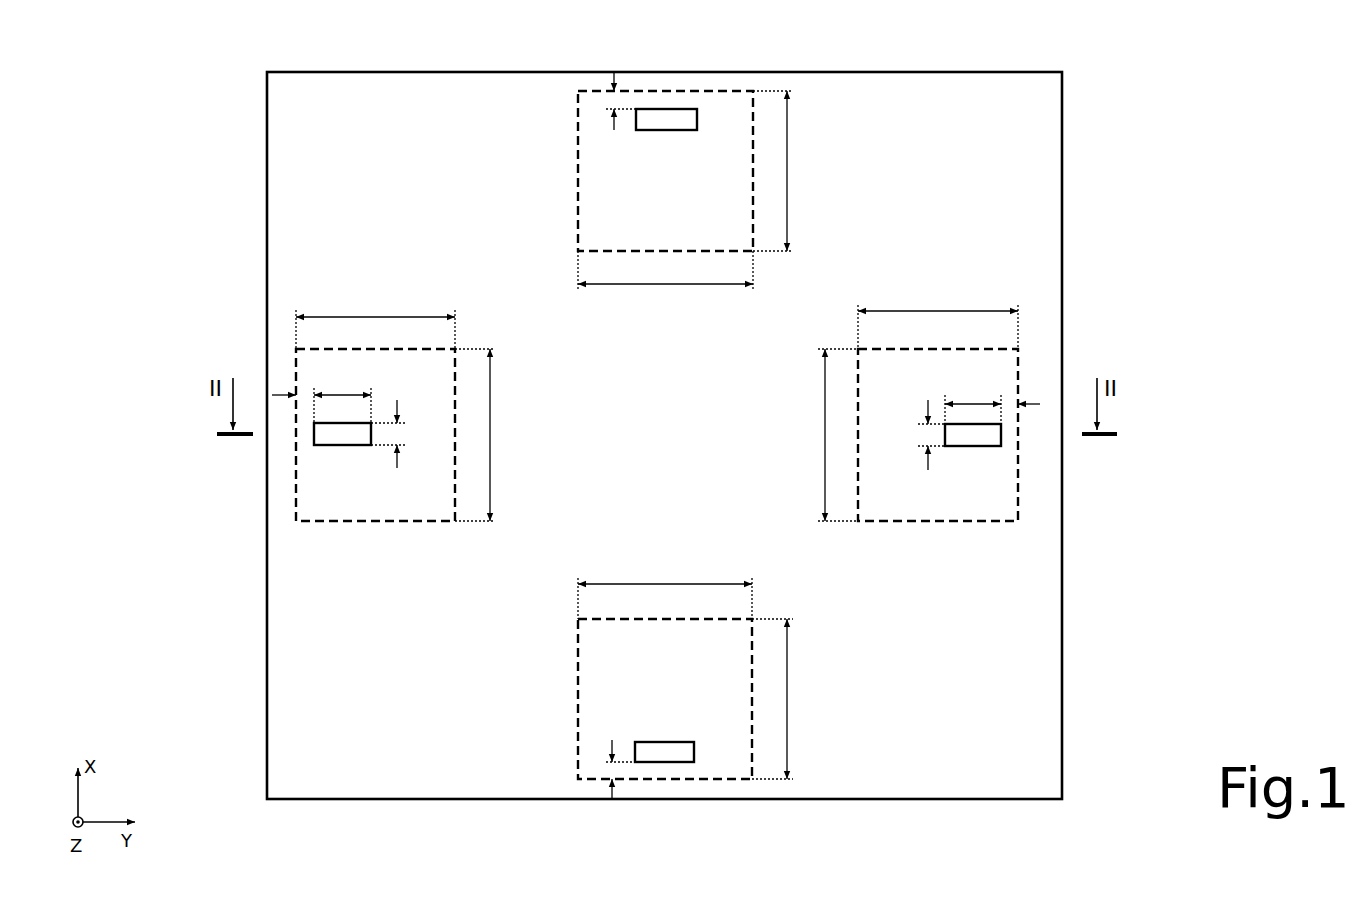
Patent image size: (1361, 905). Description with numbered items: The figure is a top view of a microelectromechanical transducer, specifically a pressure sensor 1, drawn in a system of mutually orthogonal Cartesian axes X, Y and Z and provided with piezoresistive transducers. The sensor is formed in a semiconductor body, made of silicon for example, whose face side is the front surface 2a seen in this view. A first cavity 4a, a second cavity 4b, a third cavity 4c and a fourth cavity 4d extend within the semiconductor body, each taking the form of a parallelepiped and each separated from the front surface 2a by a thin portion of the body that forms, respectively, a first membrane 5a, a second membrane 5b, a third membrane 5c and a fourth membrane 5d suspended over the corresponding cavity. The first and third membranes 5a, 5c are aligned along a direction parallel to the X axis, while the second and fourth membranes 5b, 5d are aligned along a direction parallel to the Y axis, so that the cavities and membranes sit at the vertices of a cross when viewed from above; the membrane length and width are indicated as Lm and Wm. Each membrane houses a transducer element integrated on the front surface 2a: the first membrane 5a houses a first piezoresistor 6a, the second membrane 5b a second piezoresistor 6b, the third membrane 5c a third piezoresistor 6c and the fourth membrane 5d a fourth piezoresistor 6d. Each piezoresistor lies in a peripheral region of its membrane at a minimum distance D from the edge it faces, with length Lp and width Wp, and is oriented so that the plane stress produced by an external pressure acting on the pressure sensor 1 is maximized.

The pressure sensor 1 is at (124, 112).
The front surface 2a is at (280, 112).
The first cavity 4a is at (587, 143).
The second cavity 4b is at (1008, 361).
The third cavity 4c is at (583, 735).
The fourth cavity 4d is at (304, 498).
The first membrane 5a is at (594, 192).
The second membrane 5b is at (933, 505).
The third membrane 5c is at (605, 674).
The fourth membrane 5d is at (365, 488).
The first piezoresistor 6a is at (672, 117).
The second piezoresistor 6b is at (974, 440).
The third piezoresistor 6c is at (673, 760).
The fourth piezoresistor 6d is at (336, 440).